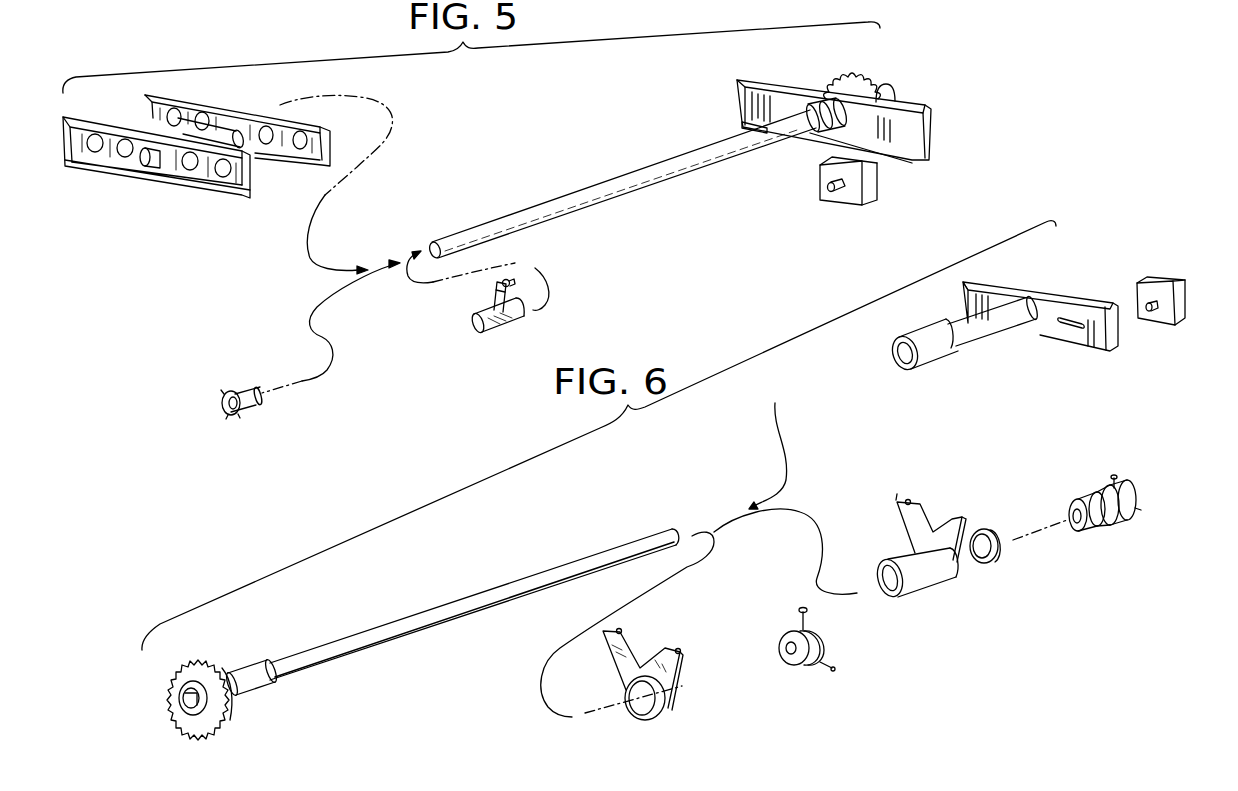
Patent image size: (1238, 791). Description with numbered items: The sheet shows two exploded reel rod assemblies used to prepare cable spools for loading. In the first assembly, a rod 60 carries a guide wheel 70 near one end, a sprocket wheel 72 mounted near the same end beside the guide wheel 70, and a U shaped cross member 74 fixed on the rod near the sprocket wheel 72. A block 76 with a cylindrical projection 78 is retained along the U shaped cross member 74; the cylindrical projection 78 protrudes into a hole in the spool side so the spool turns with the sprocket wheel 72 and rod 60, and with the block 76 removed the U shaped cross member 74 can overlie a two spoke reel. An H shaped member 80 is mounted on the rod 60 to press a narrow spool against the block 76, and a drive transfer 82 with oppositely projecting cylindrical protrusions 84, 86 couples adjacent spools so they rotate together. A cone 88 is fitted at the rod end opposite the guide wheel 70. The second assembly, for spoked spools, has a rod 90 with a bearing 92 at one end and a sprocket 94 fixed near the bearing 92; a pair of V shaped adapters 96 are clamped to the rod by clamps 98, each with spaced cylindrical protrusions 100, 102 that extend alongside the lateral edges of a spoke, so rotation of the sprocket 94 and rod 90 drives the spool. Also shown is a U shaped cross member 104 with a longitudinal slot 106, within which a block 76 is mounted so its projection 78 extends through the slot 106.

In FIG. 5, the rod 60 is at (641, 188).
In FIG. 5, the guide wheel 70 is at (895, 92).
In FIG. 5, the sprocket wheel 72 is at (847, 80).
In FIG. 5, the U shaped cross member 74 is at (778, 88).
In FIG. 5, the block 76 is at (853, 190).
In FIG. 6, the block 76 is at (1167, 280).
In FIG. 5, the cylindrical projection 78 is at (828, 188).
In FIG. 6, the cylindrical projection 78 is at (1152, 311).
In FIG. 5, the H shaped member 80 is at (233, 106).
In FIG. 5, the drive transfer 82 is at (514, 322).
In FIG. 5, the cylindrical protrusion 84 is at (488, 292).
In FIG. 5, the cylindrical protrusion 86 is at (510, 286).
In FIG. 5, the cone 88 is at (262, 406).
In FIG. 6, the rod 90 is at (463, 601).
In FIG. 6, the bearing 92 is at (185, 723).
In FIG. 6, the sprocket 94 is at (187, 667).
In FIG. 6, the V shaped adapter 96 is at (652, 722).
In FIG. 6, the clamp 98 is at (807, 670).
In FIG. 6, the cylindrical protrusion 100 is at (620, 632).
In FIG. 6, the cylindrical protrusion 102 is at (677, 650).
In FIG. 6, the U shaped cross member 104 is at (1053, 298).
In FIG. 6, the longitudinal slot 106 is at (1072, 324).